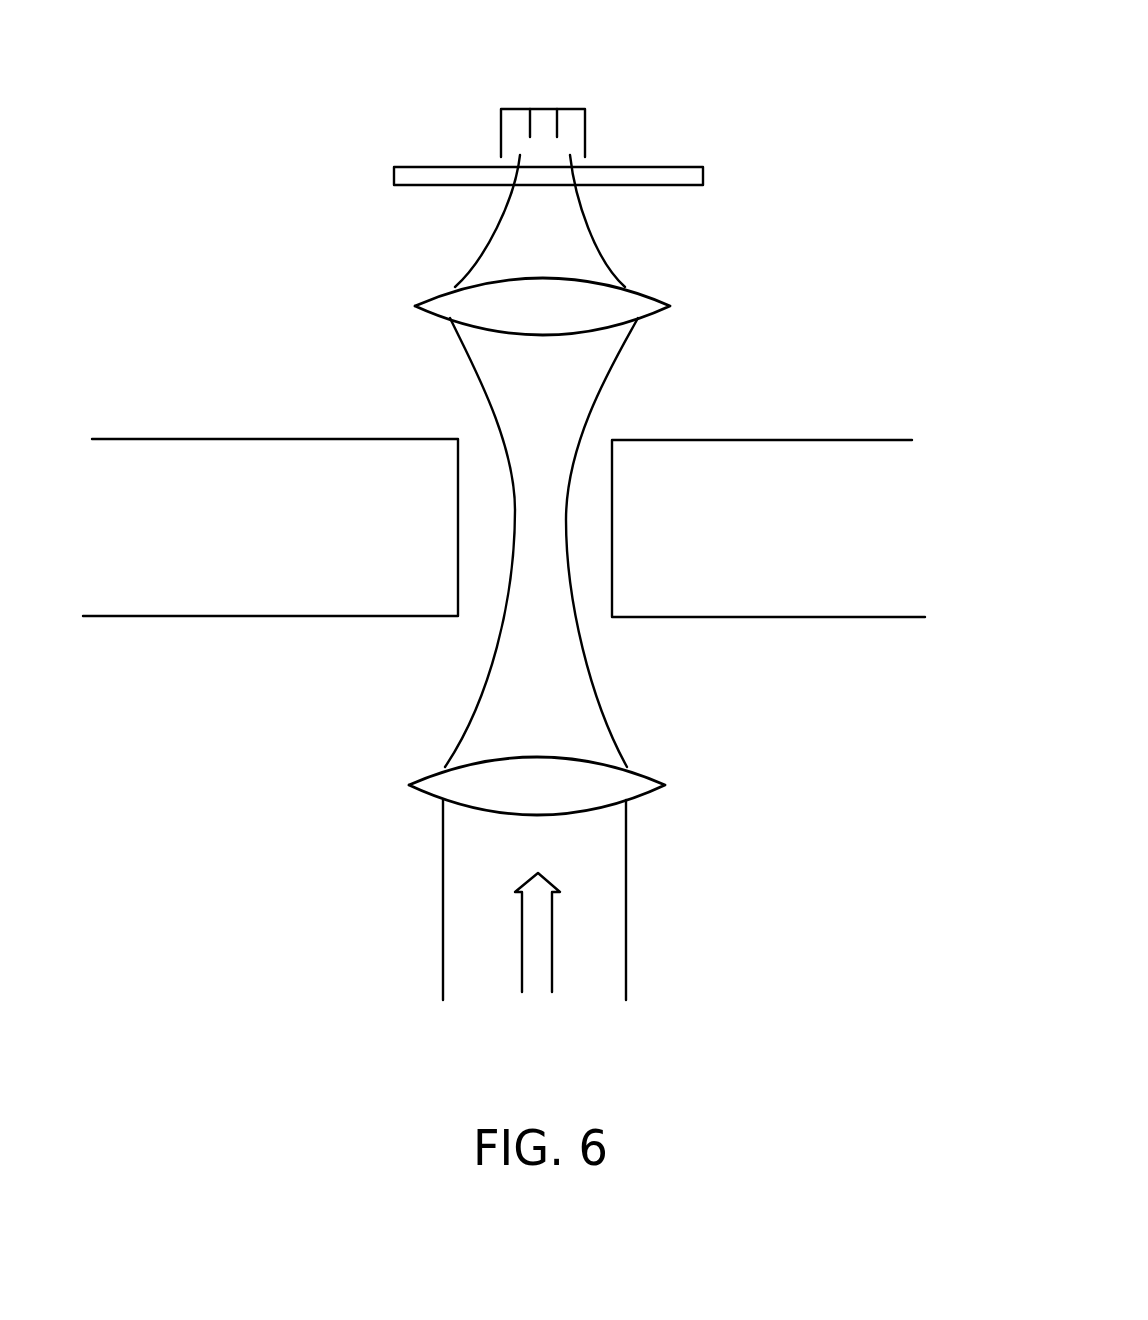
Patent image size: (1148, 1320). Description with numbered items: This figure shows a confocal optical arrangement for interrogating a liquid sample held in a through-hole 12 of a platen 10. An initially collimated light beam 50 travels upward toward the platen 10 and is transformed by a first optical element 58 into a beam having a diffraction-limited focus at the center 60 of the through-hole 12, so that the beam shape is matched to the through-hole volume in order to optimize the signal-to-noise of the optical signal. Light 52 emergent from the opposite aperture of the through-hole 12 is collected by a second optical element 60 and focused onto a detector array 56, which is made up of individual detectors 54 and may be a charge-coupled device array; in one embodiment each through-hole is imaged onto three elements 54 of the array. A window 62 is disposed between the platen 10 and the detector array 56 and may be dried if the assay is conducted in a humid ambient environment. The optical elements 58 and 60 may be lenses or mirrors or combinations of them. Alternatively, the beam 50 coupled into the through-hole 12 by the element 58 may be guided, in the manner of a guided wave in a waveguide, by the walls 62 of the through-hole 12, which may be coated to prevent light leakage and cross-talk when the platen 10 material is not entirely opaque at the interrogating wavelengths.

The platen 10 is at (235, 601).
The through-hole 12 is at (612, 555).
The light beam 50 is at (552, 955).
The emergent light 52 is at (590, 385).
The detectors 54 is at (540, 117).
The detector array 56 is at (493, 78).
The optical element 58 is at (665, 785).
The optical element 60 is at (625, 288).
The window 62 is at (703, 181).